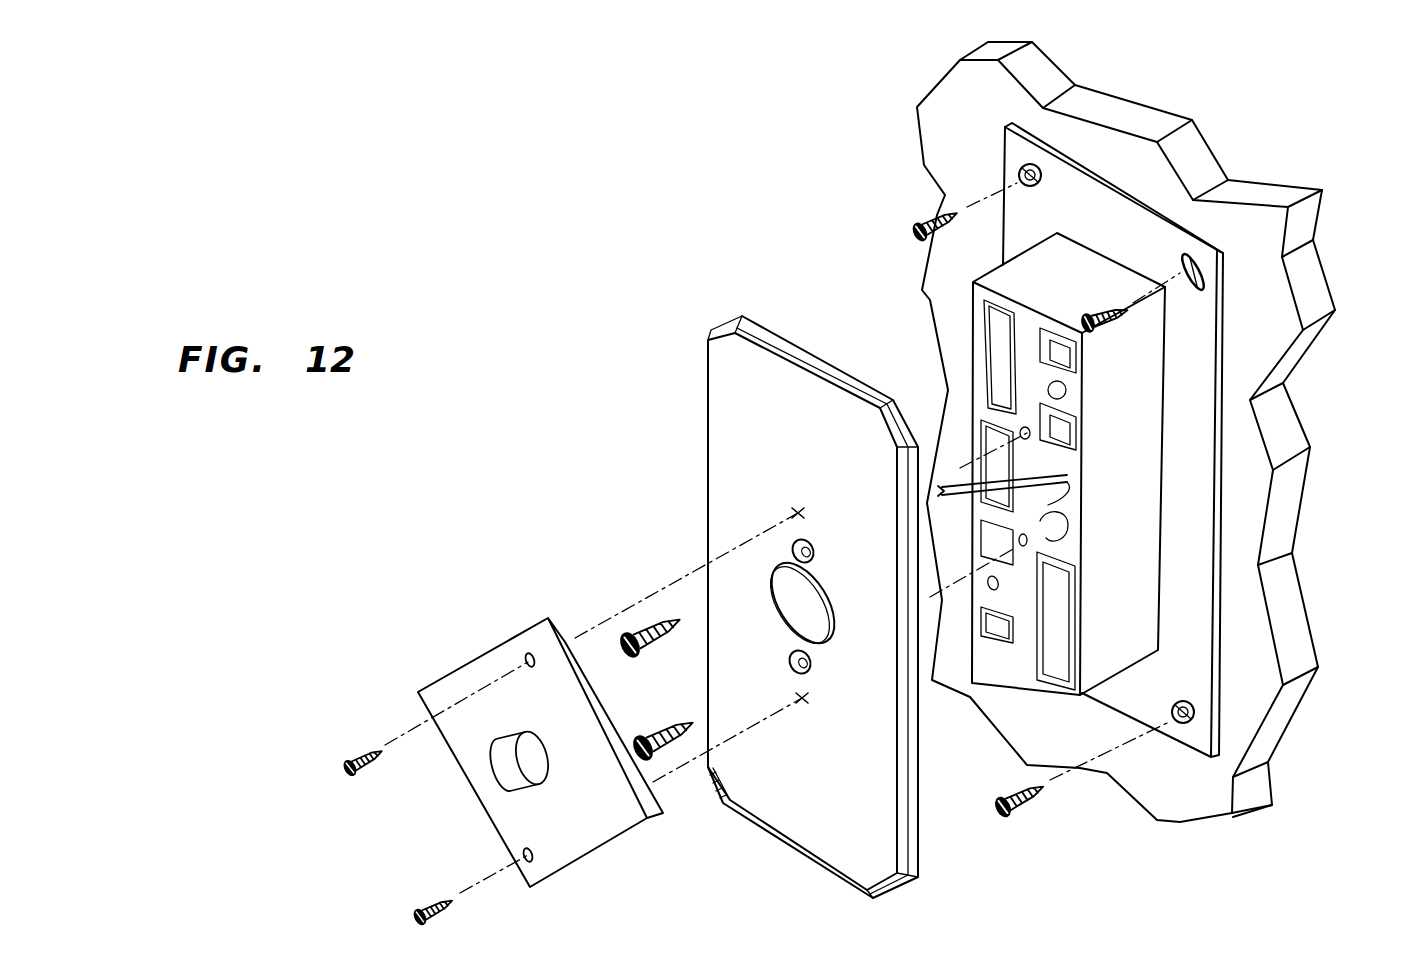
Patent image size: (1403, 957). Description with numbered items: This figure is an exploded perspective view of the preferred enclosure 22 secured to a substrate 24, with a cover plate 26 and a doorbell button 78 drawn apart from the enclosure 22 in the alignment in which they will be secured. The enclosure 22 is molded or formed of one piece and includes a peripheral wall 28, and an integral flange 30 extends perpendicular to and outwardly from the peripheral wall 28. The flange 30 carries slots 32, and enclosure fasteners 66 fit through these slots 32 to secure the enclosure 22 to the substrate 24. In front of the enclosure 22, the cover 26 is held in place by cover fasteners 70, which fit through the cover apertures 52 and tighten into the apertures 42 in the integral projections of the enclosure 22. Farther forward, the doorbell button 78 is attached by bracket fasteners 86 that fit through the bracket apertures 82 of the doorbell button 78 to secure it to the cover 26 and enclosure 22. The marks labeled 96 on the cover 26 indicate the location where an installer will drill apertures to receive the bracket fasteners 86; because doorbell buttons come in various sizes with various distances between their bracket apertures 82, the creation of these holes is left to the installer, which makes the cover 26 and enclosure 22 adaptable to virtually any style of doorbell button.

The enclosure 22 is at (1125, 482).
The substrate 24 is at (1310, 283).
The cover plate 26 is at (661, 328).
The peripheral wall 28 is at (1050, 288).
The integral flange 30 is at (1170, 575).
The slots 32 is at (1208, 244).
The apertures 42 is at (1017, 668).
The cover apertures 52 is at (805, 545).
The enclosure fasteners 66 is at (1013, 810).
The cover fasteners 70 is at (656, 727).
The doorbell button 78 is at (460, 613).
The bracket apertures 82 is at (510, 847).
The bracket fasteners 86 is at (340, 760).
The drill location 96 is at (802, 702).